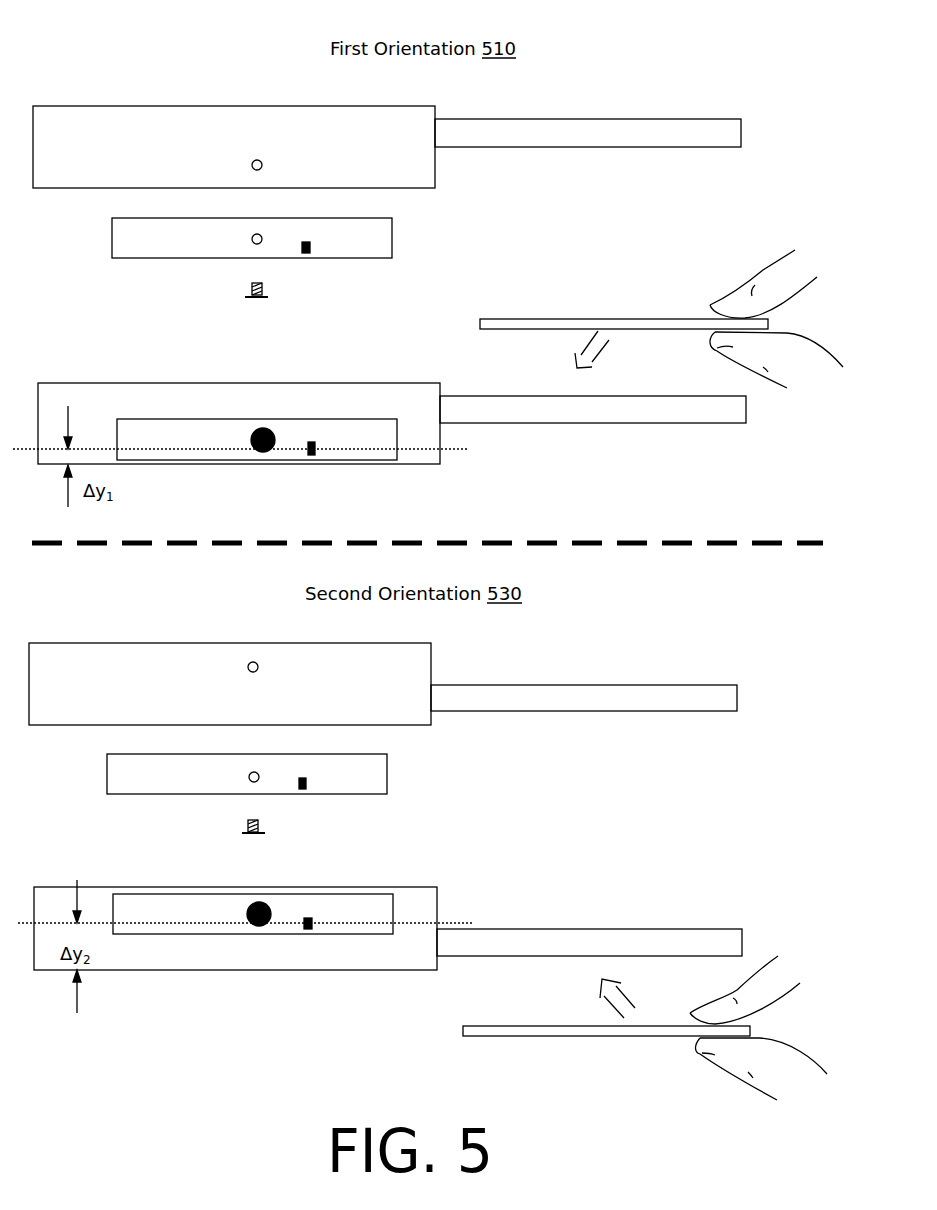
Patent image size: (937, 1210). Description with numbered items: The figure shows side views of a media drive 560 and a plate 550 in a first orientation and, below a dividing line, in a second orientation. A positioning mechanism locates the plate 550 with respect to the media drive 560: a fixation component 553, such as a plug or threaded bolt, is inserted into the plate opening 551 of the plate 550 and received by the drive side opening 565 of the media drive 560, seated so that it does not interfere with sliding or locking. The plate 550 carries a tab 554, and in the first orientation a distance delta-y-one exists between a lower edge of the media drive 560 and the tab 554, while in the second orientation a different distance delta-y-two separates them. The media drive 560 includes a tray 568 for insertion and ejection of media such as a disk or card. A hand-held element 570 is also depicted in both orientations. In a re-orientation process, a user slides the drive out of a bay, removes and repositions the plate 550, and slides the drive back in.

The media drive 560 is at (135, 106).
The drive side opening 565 is at (252, 160).
The tray 568 is at (607, 119).
The plate 550 is at (137, 265).
The plate opening 551 is at (252, 244).
The tab 554 is at (308, 253).
The fixation component 553 is at (250, 298).
The plate / card 570 is at (498, 301).